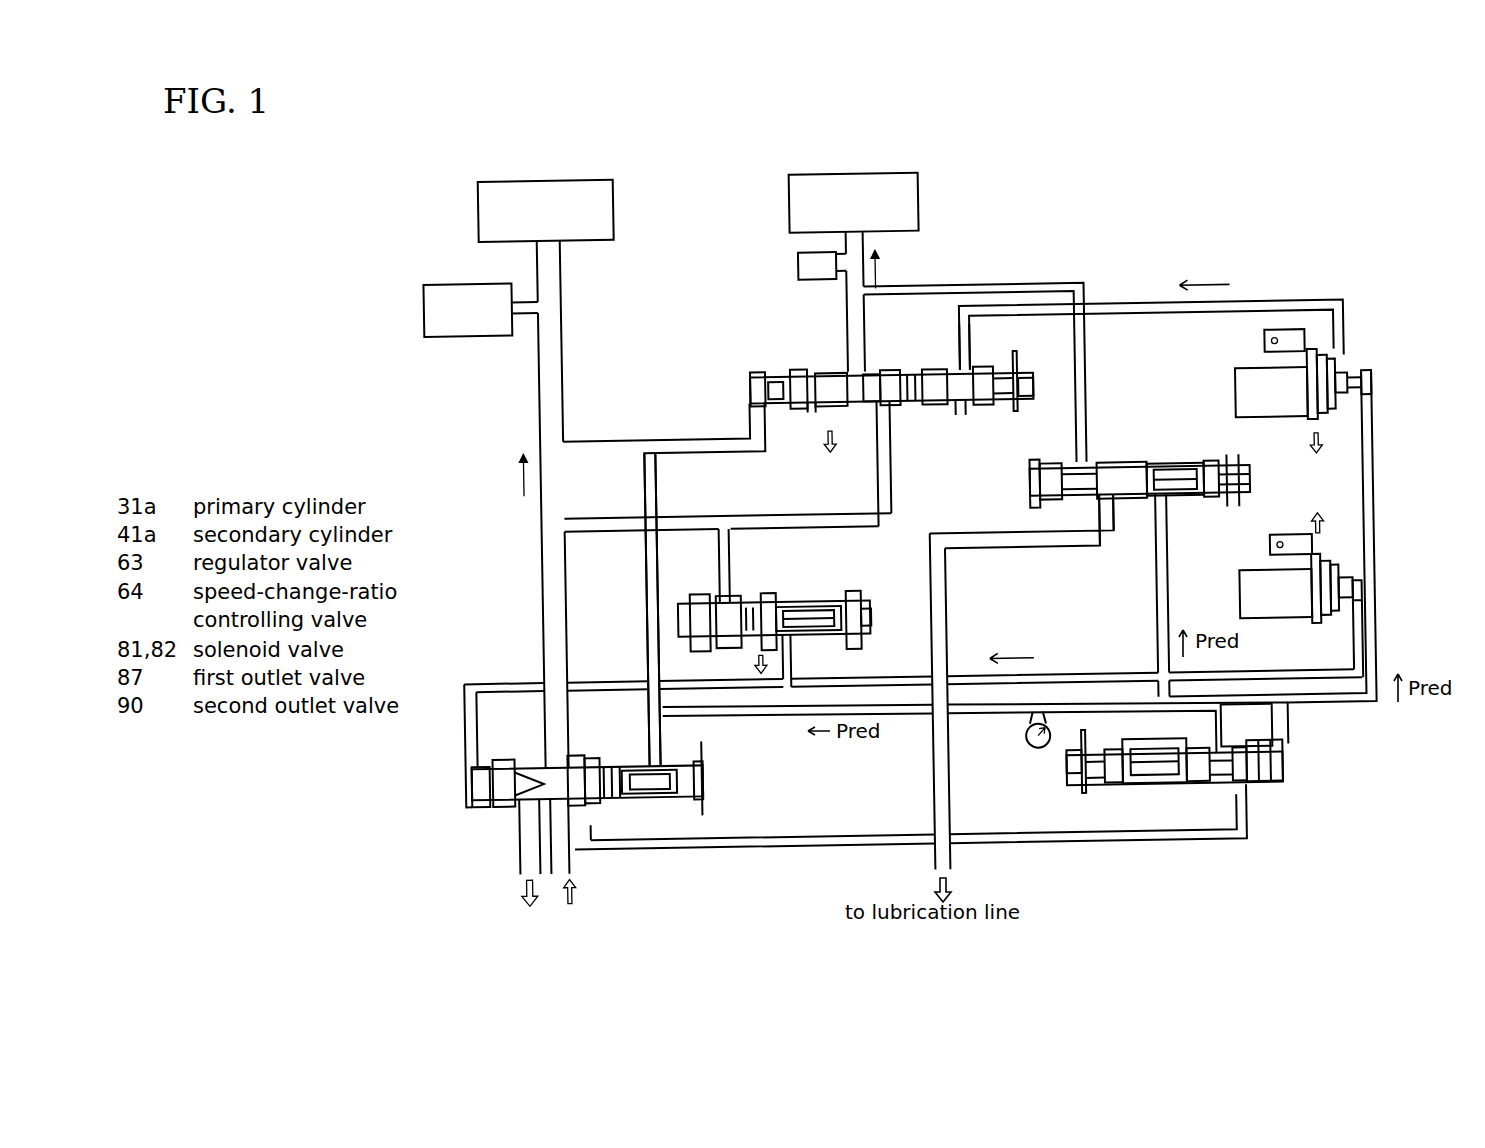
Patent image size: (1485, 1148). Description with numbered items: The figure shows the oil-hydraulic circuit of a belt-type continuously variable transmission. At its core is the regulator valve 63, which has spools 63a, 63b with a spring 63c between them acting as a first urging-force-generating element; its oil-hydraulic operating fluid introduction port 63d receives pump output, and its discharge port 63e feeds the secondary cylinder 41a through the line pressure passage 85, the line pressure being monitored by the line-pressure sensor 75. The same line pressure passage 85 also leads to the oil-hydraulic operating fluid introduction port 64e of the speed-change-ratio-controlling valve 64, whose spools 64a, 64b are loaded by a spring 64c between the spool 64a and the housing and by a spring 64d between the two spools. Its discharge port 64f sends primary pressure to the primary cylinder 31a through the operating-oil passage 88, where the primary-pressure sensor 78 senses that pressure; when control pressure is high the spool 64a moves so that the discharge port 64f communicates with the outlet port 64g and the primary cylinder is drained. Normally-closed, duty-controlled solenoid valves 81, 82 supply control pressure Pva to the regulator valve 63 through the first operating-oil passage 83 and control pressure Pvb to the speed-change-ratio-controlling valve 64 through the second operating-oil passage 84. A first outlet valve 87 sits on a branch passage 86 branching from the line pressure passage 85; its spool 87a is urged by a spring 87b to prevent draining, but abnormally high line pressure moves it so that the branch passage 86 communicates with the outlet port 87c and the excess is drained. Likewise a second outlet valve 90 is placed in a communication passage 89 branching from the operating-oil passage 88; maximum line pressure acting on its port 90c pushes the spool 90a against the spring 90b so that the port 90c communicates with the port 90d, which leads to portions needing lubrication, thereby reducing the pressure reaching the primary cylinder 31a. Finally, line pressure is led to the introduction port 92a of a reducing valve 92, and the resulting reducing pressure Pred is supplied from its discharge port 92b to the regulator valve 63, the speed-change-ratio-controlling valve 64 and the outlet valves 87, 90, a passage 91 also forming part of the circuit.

The primary cylinder 31a is at (924, 199).
The secondary cylinder 41a is at (484, 210).
The regulator valve 63 is at (615, 809).
The spool 63a is at (513, 760).
The spool 63b is at (706, 771).
The spring 63c is at (665, 797).
The oil-hydraulic operating fluid introduction port 63d is at (568, 837).
The discharge port 63e is at (566, 713).
The speed-change-ratio-controlling valve 64 is at (801, 530).
The spool 64a is at (821, 374).
The spool 64b is at (987, 406).
The spring 64c is at (757, 402).
The spring 64d is at (967, 416).
The oil-hydraulic operating fluid introduction port 64e is at (883, 444).
The discharge port 64f is at (865, 349).
The outlet port 64g is at (820, 407).
The line-pressure sensor 75 is at (428, 315).
The primary-pressure sensor 78 is at (803, 270).
The solenoid valve 81 is at (1291, 611).
The solenoid valve 82 is at (1283, 420).
The first operating-oil passage 83 is at (1104, 676).
The second operating-oil passage 84 is at (1310, 308).
The line pressure passage 85 is at (562, 414).
The branch passage 86 is at (698, 515).
The first outlet valve 87 is at (764, 608).
The spool 87a is at (723, 596).
The spring 87b is at (810, 634).
The outlet port 87c is at (754, 636).
The operating-oil passage 88 is at (851, 300).
The communication passage 89 is at (1084, 288).
The second outlet valve 90 is at (1136, 531).
The spool 90a is at (1133, 509).
The spring 90b is at (1178, 509).
The port 90c is at (1080, 440).
The port 90d is at (1102, 518).
The oil passage 91 is at (945, 590).
The reducing valve 92 is at (932, 806).
The introduction port 92a is at (1205, 850).
The discharge port 92b is at (1207, 733).